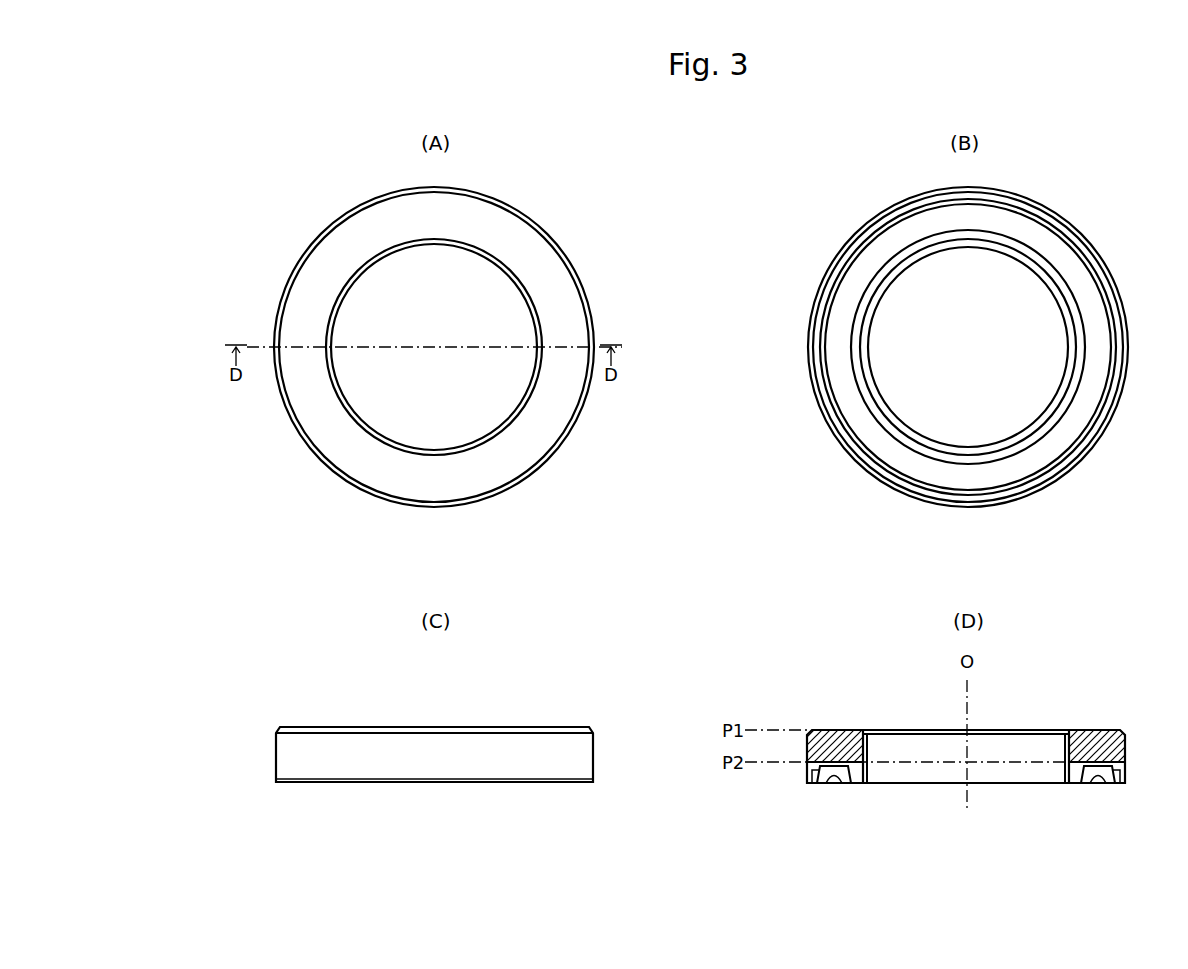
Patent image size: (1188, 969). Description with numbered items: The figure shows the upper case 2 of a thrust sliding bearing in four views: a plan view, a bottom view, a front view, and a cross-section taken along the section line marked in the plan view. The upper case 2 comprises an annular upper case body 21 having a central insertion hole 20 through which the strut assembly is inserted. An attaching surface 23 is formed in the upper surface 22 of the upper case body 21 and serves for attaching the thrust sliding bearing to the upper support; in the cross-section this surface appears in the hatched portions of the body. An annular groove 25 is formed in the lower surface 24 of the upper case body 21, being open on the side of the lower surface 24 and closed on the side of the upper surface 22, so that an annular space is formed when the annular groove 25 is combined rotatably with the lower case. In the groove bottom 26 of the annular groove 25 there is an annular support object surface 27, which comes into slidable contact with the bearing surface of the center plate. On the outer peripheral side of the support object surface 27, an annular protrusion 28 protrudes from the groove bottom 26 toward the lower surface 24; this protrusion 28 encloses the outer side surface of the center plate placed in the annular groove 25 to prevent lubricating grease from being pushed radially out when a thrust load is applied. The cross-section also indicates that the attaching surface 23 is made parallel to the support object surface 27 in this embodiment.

The upper case 2 is at (615, 175).
The insertion hole 20 is at (397, 286).
The upper case body 21 is at (530, 214).
The upper surface 22 is at (541, 261).
The attaching surface 23 is at (558, 286).
The lower surface 24 is at (1096, 262).
The annular groove 25 is at (1103, 318).
The groove bottom 26 is at (945, 470).
The support object surface 27 is at (970, 476).
The annular protrusion 28 is at (852, 443).